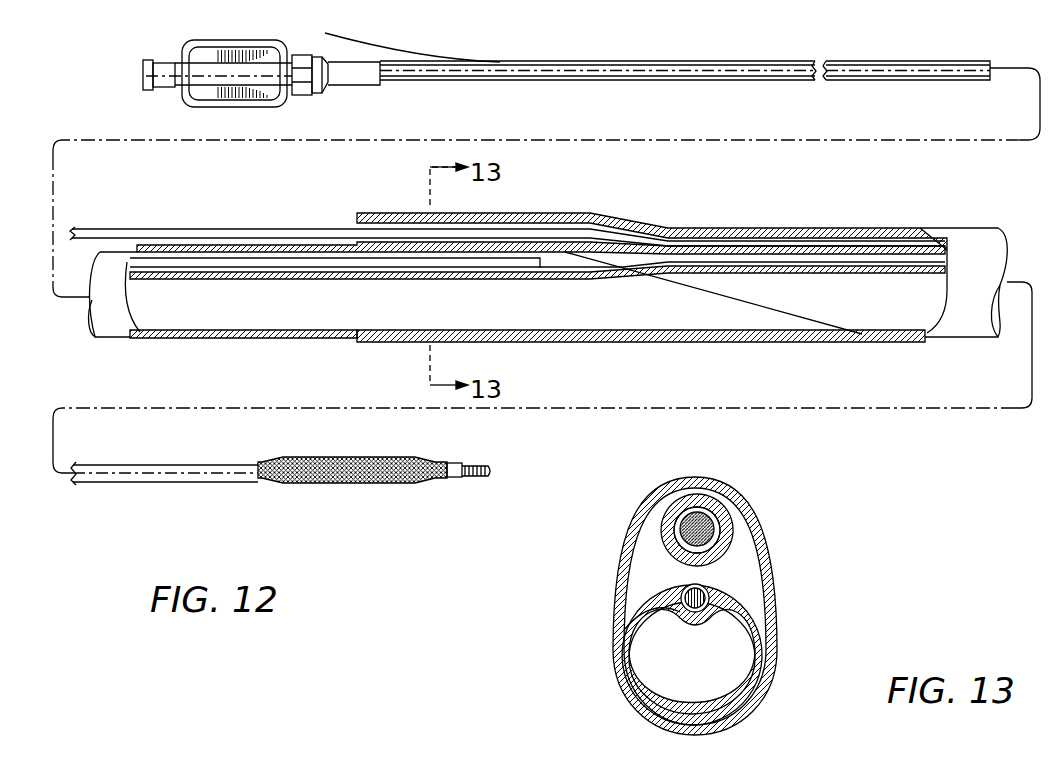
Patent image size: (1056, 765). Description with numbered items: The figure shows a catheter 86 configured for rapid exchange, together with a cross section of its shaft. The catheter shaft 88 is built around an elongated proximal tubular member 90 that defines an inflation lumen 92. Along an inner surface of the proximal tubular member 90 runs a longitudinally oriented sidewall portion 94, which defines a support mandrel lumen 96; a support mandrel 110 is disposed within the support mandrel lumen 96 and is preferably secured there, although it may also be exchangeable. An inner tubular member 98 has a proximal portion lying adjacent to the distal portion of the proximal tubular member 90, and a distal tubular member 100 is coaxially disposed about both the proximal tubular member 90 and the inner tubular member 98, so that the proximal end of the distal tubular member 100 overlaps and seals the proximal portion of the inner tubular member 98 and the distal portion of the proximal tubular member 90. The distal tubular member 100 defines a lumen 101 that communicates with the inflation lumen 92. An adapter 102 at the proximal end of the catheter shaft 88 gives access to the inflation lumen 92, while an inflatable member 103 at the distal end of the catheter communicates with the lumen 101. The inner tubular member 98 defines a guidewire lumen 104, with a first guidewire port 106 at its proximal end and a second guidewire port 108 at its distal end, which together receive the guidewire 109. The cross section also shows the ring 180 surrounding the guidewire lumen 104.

In FIG. 12, the catheter 86 is at (620, 52).
In FIG. 12, the catheter shaft 88 is at (650, 86).
In FIG. 12, the proximal tubular member 90 is at (755, 82).
In FIG. 13, the proximal tubular member 90 is at (755, 712).
In FIG. 12, the inflation lumen 92 is at (287, 313).
In FIG. 13, the inflation lumen 92 is at (716, 675).
In FIG. 13, the sidewall portion 94 is at (632, 612).
In FIG. 13, the support mandrel lumen 96 is at (712, 596).
In FIG. 12, the inner tubular member 98 is at (792, 274).
In FIG. 13, the inner tubular member 98 is at (740, 542).
In FIG. 12, the distal tubular member 100 is at (700, 342).
In FIG. 12, the lumen 101 is at (912, 313).
In FIG. 12, the adapter 102 is at (285, 58).
In FIG. 12, the inflatable member 103 is at (352, 483).
In FIG. 13, the guidewire lumen 104 is at (693, 512).
In FIG. 12, the first guidewire port 106 is at (357, 228).
In FIG. 12, the second guidewire port 108 is at (468, 463).
In FIG. 13, the guidewire 109 is at (682, 528).
In FIG. 13, the support mandrel 110 is at (735, 602).
In FIG. 13, the lumen wall ring 180 is at (738, 505).